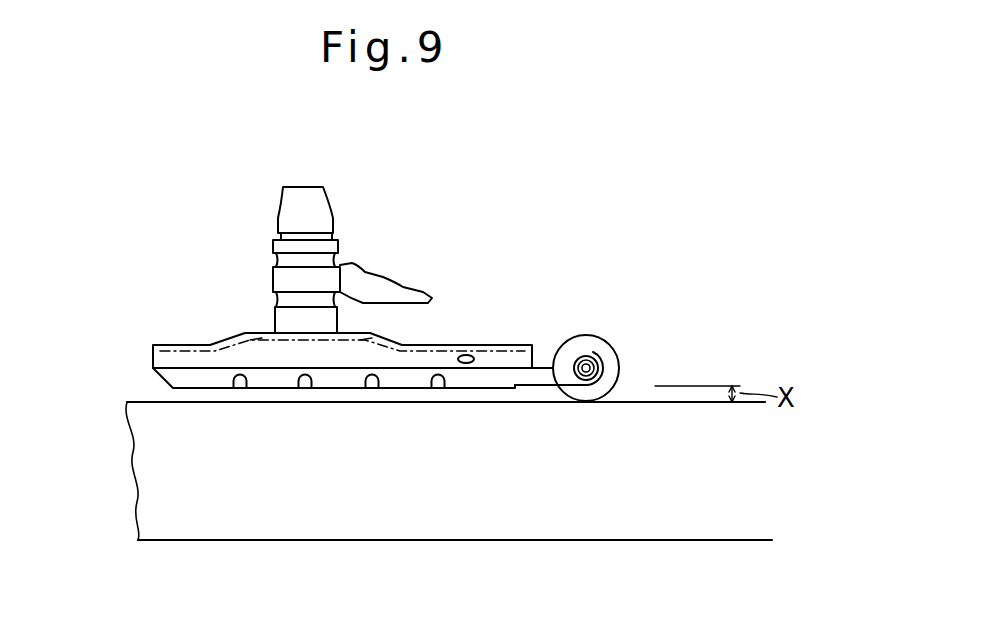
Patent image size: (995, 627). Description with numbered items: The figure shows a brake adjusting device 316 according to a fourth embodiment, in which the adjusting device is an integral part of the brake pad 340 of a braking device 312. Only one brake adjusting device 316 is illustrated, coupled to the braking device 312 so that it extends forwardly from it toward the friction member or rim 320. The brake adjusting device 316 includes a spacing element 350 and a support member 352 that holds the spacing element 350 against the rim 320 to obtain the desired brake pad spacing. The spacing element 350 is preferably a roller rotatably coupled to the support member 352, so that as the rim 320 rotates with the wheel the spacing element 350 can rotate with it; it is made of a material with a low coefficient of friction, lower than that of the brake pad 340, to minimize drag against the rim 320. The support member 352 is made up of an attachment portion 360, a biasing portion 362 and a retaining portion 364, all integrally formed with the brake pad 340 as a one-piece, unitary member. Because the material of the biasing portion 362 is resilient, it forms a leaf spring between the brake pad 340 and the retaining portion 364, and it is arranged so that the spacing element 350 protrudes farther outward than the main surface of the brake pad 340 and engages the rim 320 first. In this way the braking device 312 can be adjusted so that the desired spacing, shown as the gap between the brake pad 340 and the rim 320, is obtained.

The braking device 312 is at (375, 270).
The brake adjusting device 316 is at (490, 250).
The rim 320 is at (588, 542).
The brake pad 340 is at (173, 377).
The spacing element 350 is at (607, 342).
The support member 352 is at (542, 363).
The attachment portion 360 is at (520, 388).
The biasing portion 362 is at (550, 385).
The retaining portion 364 is at (603, 367).